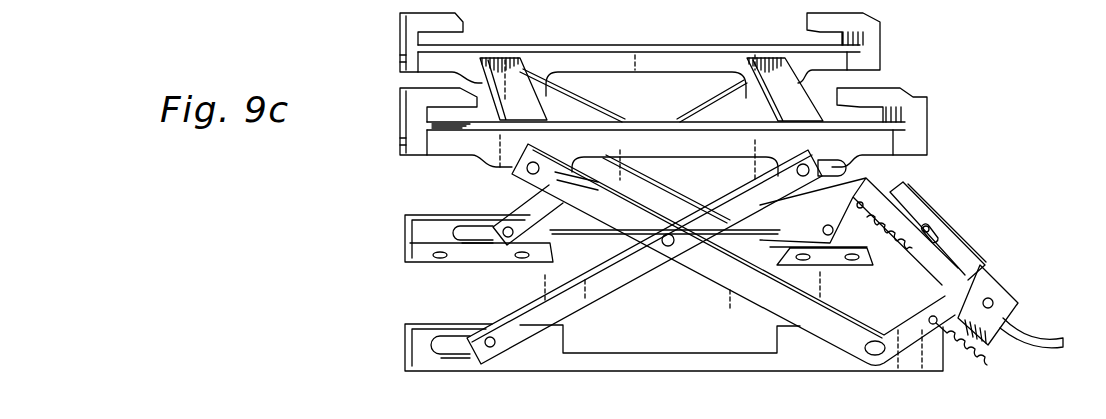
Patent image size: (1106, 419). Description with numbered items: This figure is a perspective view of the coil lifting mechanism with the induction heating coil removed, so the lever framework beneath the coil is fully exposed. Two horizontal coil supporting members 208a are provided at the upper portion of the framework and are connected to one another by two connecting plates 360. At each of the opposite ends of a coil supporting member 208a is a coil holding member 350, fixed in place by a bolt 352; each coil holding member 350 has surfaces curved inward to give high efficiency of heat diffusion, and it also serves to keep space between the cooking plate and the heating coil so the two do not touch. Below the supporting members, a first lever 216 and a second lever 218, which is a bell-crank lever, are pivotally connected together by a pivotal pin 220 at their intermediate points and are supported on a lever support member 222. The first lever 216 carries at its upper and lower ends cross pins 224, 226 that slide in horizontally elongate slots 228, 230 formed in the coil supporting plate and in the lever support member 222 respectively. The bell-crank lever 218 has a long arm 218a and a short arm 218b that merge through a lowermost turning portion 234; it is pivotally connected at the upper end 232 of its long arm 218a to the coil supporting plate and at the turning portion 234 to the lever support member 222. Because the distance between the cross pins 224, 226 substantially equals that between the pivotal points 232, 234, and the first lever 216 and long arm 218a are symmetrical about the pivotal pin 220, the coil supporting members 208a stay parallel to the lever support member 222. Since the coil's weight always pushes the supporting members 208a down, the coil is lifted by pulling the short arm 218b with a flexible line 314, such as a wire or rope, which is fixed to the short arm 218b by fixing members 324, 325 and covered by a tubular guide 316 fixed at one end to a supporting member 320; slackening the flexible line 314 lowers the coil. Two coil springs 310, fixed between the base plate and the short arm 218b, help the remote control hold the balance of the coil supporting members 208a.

The coil supporting member 208a is at (612, 47).
The coil holding member 350 is at (399, 19).
The bolt 352 is at (399, 59).
The connecting plate 360 is at (509, 58).
The first lever 216 is at (524, 214).
The second lever 218 is at (830, 366).
The long arm 218a is at (686, 222).
The short arm 218b is at (880, 178).
The pivotal pin 220 is at (668, 248).
The lever support member 222 is at (660, 345).
The cross pin 224 is at (798, 165).
The cross pin 226 is at (507, 238).
The elongate slot 228 is at (826, 168).
The elongate slot 230 is at (430, 346).
The upper end of long arm 232 is at (492, 164).
The lowermost turning portion 234 is at (878, 357).
The coil spring 310 is at (900, 262).
The flexible line 314 is at (993, 298).
The tubular guide 316 is at (1034, 340).
The supporting member 320 is at (1002, 282).
The fixing member 324 is at (920, 198).
The fixing member 325 is at (942, 236).